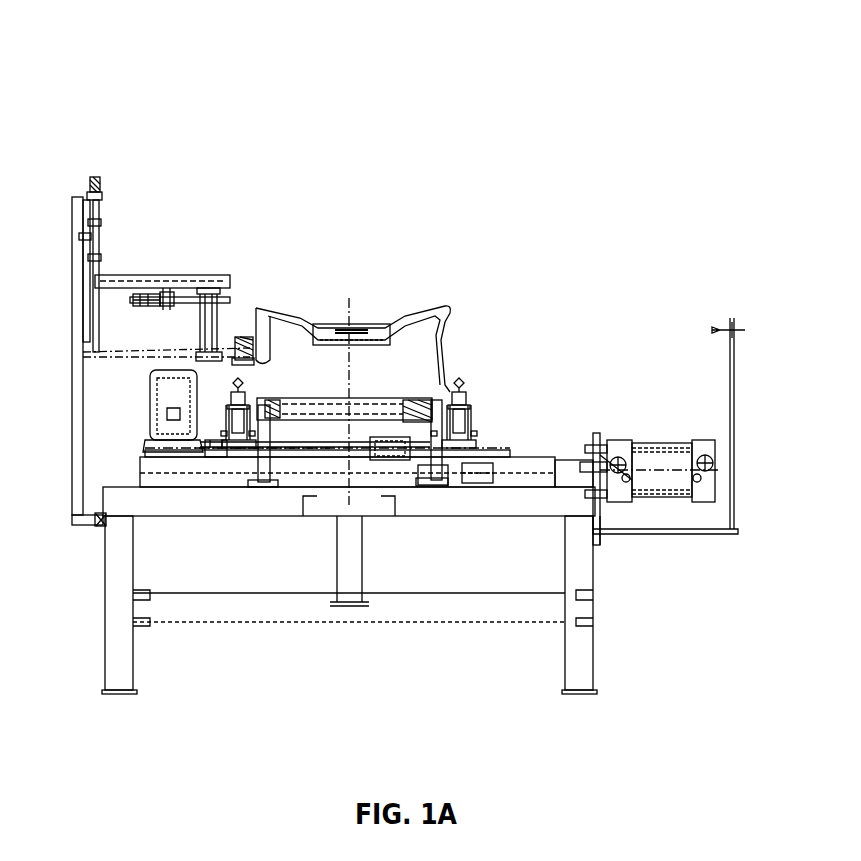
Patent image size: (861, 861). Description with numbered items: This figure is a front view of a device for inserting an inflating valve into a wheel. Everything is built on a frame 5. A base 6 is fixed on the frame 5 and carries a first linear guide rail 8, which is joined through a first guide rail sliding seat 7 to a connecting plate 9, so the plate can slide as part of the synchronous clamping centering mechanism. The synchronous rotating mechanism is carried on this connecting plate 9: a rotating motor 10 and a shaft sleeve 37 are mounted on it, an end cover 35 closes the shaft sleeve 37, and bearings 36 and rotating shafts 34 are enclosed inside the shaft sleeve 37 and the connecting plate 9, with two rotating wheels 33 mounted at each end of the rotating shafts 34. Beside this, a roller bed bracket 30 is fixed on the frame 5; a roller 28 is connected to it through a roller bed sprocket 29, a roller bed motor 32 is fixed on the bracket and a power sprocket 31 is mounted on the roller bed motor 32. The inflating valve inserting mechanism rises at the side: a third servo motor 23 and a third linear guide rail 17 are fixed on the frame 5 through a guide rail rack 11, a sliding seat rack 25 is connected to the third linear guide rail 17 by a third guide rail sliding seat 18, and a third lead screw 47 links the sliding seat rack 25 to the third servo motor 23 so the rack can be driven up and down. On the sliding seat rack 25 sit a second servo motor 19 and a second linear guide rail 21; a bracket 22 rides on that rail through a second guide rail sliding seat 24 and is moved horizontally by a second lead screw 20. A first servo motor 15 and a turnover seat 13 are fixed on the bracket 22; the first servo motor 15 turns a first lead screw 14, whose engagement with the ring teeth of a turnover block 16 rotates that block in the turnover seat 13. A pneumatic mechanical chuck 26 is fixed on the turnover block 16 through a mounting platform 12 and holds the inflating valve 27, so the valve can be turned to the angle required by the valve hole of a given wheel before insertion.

The frame 5 is at (227, 478).
The base 6 is at (118, 681).
The first guide rail sliding seat 7 is at (210, 460).
The first linear guide rail 8 is at (200, 447).
The connecting plate 9 is at (213, 457).
The rotating motor 10 is at (192, 460).
The guide rail rack 11 is at (76, 512).
The mounting platform 12 is at (226, 364).
The turnover seat 13 is at (233, 361).
The first lead screw 14 is at (213, 358).
The first servo motor 15 is at (198, 360).
The turnover block 16 is at (235, 356).
The third linear guide rail 17 is at (84, 312).
The third guide rail sliding seat 18 is at (90, 258).
The second servo motor 19 is at (82, 238).
The second lead screw 20 is at (135, 303).
The second linear guide rail 21 is at (88, 198).
The bracket 22 is at (192, 289).
The third servo motor 23 is at (208, 293).
The second guide rail sliding seat 24 is at (190, 277).
The sliding seat rack 25 is at (152, 296).
The pneumatic mechanical chuck 26 is at (248, 337).
The inflating valve 27 is at (262, 308).
The roller 28 is at (310, 398).
The roller bed sprocket 29 is at (410, 398).
The roller bed bracket 30 is at (437, 410).
The power sprocket 31 is at (459, 385).
The roller bed motor 32 is at (462, 392).
The rotating wheels 33 is at (471, 382).
The rotating shafts 34 is at (474, 390).
The end cover 35 is at (477, 398).
The bearings 36 is at (478, 408).
The shaft sleeve 37 is at (479, 432).
The third lead screw 47 is at (96, 200).